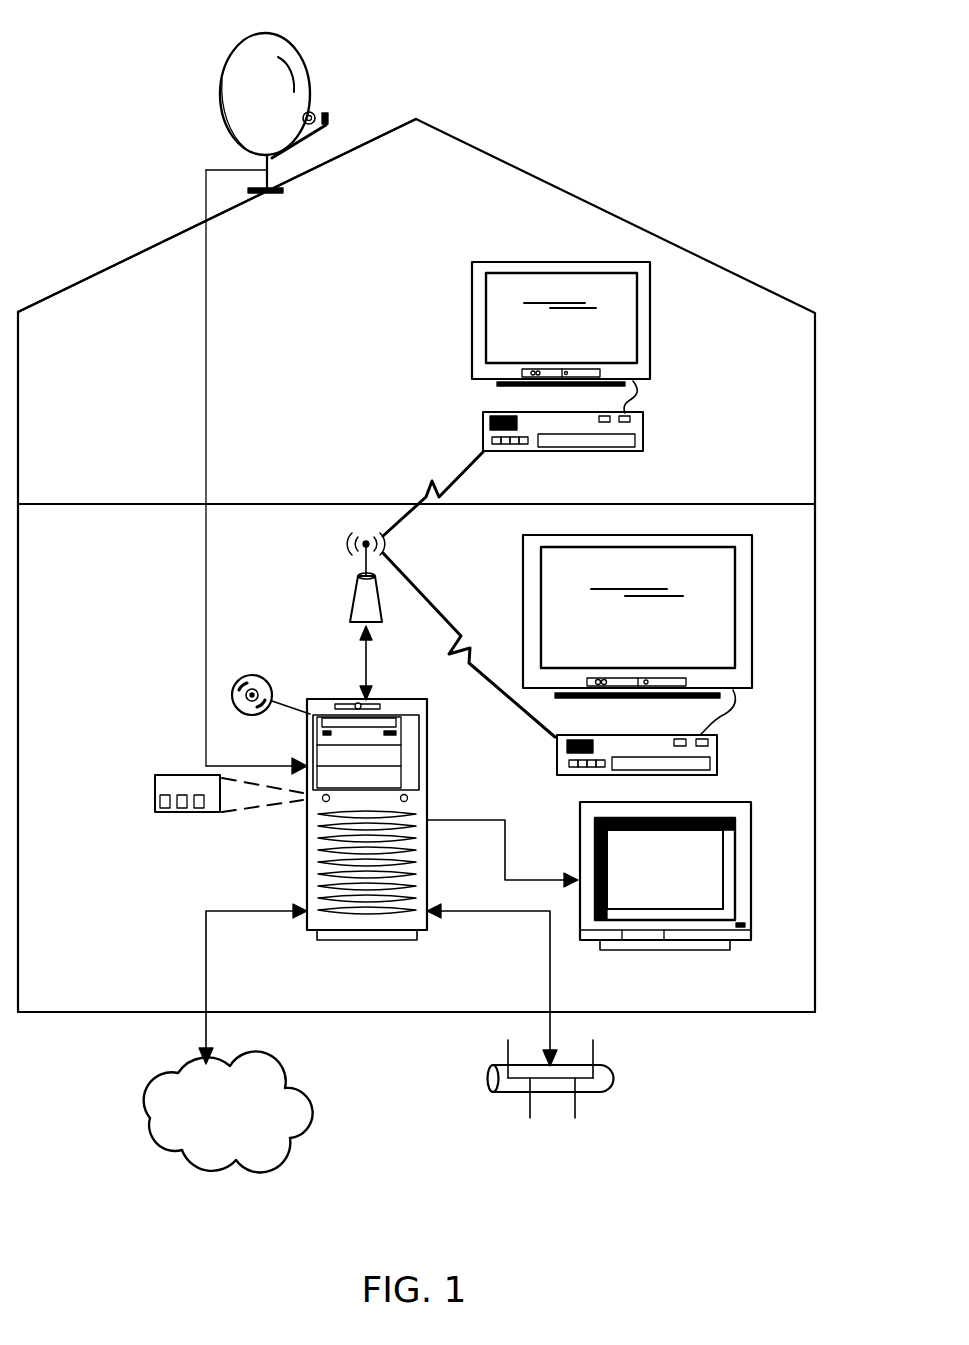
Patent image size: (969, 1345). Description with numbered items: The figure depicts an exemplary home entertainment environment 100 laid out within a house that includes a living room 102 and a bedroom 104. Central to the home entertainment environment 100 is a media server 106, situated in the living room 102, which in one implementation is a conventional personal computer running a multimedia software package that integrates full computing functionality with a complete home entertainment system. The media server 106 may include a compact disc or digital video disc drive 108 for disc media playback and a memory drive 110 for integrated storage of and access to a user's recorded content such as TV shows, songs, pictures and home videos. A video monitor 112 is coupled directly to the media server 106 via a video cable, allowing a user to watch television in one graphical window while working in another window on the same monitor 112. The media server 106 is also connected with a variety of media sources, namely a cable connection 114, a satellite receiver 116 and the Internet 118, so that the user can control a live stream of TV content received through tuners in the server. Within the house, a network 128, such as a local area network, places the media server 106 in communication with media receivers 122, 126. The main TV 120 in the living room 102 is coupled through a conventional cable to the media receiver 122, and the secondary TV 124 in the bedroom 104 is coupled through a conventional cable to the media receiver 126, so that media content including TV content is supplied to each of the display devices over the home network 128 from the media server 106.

The home entertainment environment 100 is at (655, 115).
The living room 102 is at (735, 1013).
The bedroom 104 is at (163, 238).
The media server 106 is at (332, 698).
The CD or DVD drive 108 is at (242, 675).
The memory drive 110 is at (154, 790).
The video monitor 112 is at (752, 876).
The cable connection 114 is at (615, 1078).
The satellite receiver 116 is at (249, 60).
The Internet 118 is at (140, 1118).
The main TV 120 is at (752, 617).
The media receiver 122 is at (717, 755).
The secondary TV 124 is at (524, 262).
The media receiver 126 is at (643, 442).
The network 128 is at (355, 605).